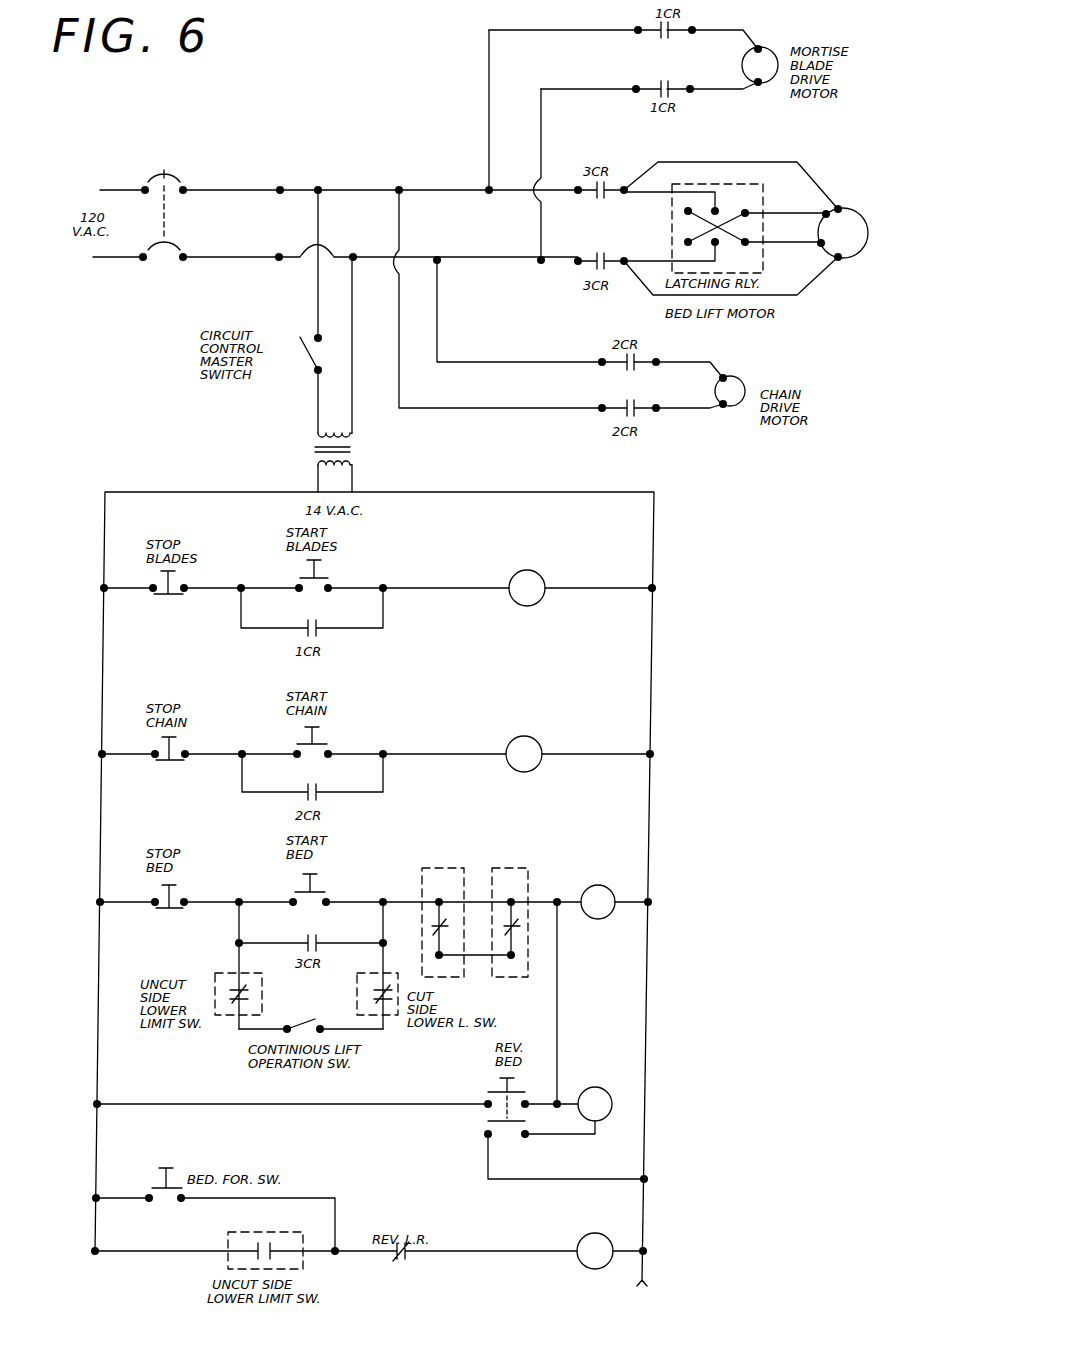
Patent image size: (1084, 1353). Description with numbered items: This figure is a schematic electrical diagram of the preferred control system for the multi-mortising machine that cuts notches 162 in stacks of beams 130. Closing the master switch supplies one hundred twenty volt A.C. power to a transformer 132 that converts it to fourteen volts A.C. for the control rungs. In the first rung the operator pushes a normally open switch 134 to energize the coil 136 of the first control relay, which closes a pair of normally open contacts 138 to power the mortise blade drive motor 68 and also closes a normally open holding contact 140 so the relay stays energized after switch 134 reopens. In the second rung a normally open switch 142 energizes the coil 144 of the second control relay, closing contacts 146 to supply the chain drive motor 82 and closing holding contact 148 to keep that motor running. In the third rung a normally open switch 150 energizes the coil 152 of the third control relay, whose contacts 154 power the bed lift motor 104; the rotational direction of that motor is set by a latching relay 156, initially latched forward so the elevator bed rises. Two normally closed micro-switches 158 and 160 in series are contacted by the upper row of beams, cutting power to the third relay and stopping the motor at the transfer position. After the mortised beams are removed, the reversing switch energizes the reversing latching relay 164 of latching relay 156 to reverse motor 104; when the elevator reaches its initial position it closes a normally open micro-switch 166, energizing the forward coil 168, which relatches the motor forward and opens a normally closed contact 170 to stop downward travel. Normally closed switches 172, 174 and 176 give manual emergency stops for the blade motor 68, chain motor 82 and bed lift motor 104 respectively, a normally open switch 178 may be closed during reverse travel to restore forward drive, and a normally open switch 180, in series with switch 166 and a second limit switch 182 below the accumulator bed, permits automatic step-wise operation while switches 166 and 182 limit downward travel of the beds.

The mortise blade drive motor 68 is at (768, 46).
The chain drive motor 82 is at (742, 386).
The bed lift motor 104 is at (858, 210).
The stacks of beams 130 is at (300, 337).
The transformer 132 is at (342, 433).
The normally open switch 134 is at (322, 576).
The coil of control relay 1CR 136 is at (540, 576).
The normally open contacts 138 is at (664, 40).
The normally open contact 140 is at (316, 622).
The normally open switch 142 is at (324, 742).
The coil of control relay 2CR 144 is at (534, 740).
The normally open contacts 146 is at (636, 408).
The normally open contact 148 is at (316, 786).
The normally open switch 150 is at (323, 890).
The coil of control relay 3CR 152 is at (598, 885).
The normally open contacts 154 is at (606, 250).
The latching relay 156 is at (738, 190).
The normally closed micro-switch 158 is at (456, 884).
The normally closed micro-switch 160 is at (526, 884).
The notches 162 is at (494, 1090).
The reversing latching relay 164 is at (600, 1087).
The normally open micro-switch 166 is at (225, 984).
The forward coil 168 is at (618, 1237).
The normally closed contact 170 is at (404, 1260).
The normally closed switch 172 is at (180, 595).
The normally closed switch 174 is at (180, 762).
The normally closed switch 176 is at (180, 909).
The normally open switch 178 is at (152, 1187).
The normally open switch 180 is at (330, 1005).
The second limit switch 182 is at (393, 982).